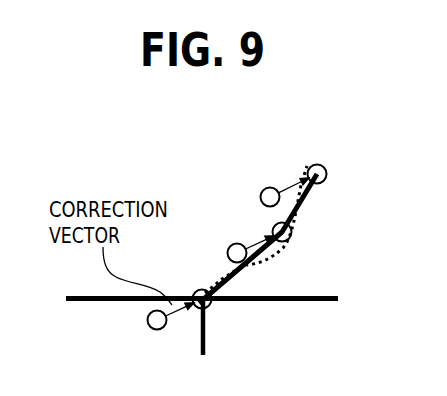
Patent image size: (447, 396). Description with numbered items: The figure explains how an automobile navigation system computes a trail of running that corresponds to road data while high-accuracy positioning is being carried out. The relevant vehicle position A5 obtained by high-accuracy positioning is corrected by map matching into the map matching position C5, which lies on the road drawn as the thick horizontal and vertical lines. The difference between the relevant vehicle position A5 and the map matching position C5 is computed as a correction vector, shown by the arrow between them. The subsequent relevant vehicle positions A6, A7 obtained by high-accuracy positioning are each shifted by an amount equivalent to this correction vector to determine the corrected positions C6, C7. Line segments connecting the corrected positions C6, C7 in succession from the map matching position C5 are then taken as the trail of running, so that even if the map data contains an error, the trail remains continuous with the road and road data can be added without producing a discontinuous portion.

The relevant vehicle position A5 is at (143, 331).
The relevant vehicle position A6 is at (221, 252).
The relevant vehicle position A7 is at (256, 197).
The map matching position C5 is at (217, 312).
The corrected position C6 is at (299, 237).
The corrected position C7 is at (334, 177).